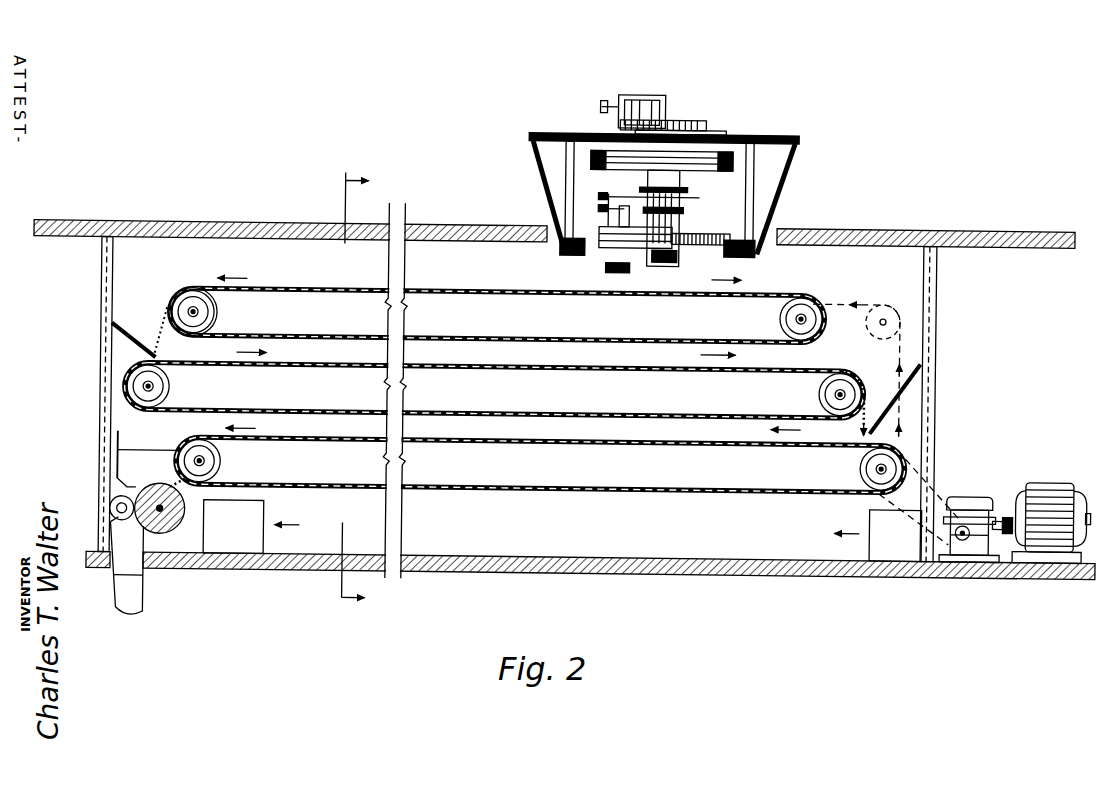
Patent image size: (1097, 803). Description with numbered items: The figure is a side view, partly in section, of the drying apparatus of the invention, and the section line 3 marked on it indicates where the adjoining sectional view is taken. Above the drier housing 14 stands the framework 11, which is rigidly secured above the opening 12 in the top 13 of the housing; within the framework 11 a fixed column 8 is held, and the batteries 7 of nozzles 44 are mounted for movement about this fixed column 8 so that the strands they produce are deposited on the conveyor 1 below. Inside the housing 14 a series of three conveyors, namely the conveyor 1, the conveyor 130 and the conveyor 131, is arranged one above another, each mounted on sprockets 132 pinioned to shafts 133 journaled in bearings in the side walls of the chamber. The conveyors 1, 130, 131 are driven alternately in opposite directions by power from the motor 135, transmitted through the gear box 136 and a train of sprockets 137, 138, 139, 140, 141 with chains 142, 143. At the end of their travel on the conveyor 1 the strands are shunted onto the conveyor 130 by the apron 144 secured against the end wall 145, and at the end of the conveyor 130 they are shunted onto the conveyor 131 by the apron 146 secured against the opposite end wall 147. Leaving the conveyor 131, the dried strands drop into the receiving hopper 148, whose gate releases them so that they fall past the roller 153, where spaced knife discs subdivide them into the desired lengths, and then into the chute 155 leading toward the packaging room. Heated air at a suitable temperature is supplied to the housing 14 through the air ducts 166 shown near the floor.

The conveyor 1 is at (503, 294).
The section line 3- 3 is at (357, 394).
The batteries of nozzles 7 is at (596, 222).
The fixed column 8 is at (675, 229).
The framework 11 is at (778, 136).
The opening 12 is at (774, 226).
The top 13 is at (852, 228).
The drier housing 14 is at (940, 402).
The nozzles 44 is at (616, 272).
The conveyor 130 is at (452, 370).
The conveyor 131 is at (490, 444).
The sprockets 132 is at (211, 326).
The shafts 133 is at (198, 316).
The motor 135 is at (1045, 478).
The gear box 136 is at (975, 496).
The sprocket 137 is at (990, 541).
The sprocket 138 is at (861, 469).
The sprocket 139 is at (819, 391).
The sprocket 140 is at (779, 318).
The sprocket 141 is at (868, 328).
The chain 142 is at (932, 496).
The chain 143 is at (905, 358).
The apron 144 is at (136, 342).
The end wall 145 is at (99, 302).
The apron 146 is at (871, 402).
The end wall 147 is at (936, 302).
The receiving hopper 148 is at (140, 454).
The roller 153 is at (170, 536).
The chute 155 is at (140, 598).
The air ducts 166 is at (250, 515).